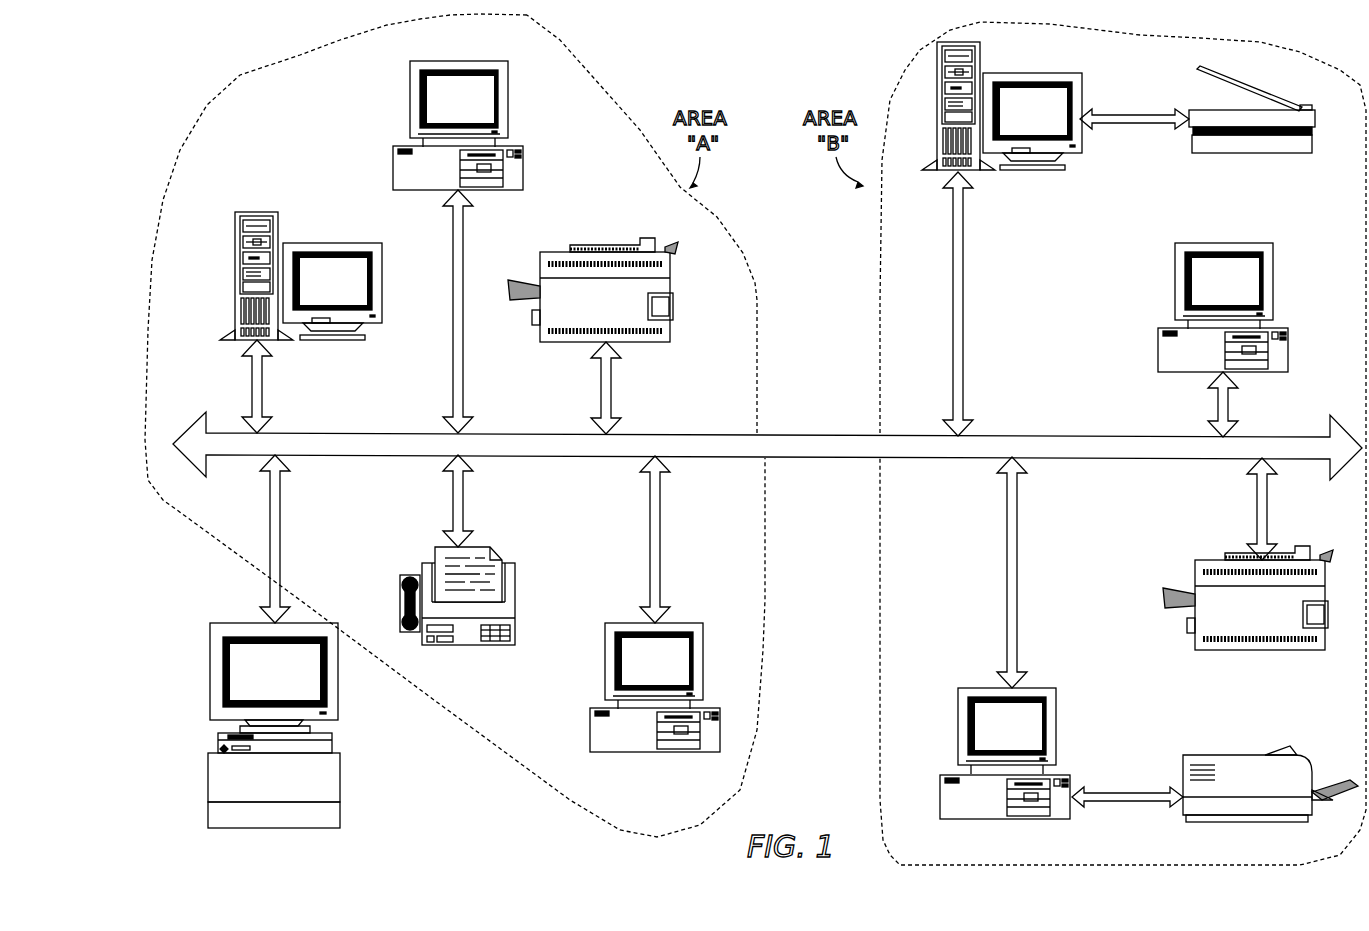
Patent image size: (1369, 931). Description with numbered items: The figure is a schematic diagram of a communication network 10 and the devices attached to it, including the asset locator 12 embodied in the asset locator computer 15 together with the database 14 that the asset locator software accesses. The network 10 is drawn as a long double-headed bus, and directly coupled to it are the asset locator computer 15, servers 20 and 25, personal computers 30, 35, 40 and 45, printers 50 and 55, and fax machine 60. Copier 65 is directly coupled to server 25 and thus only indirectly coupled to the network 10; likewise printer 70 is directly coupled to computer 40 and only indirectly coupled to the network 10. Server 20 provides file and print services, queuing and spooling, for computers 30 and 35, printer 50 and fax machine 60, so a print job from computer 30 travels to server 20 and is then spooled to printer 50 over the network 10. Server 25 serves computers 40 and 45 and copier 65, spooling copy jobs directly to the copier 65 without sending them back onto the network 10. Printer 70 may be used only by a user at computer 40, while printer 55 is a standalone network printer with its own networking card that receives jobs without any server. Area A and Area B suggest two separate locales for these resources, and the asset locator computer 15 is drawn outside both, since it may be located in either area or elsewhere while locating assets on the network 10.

The communication network 10 is at (785, 408).
The asset locator 12 is at (340, 763).
The database 14 is at (340, 815).
The asset locator computer 15 is at (194, 733).
The server 20 is at (235, 308).
The server 25 is at (937, 137).
The personal computer 30 is at (393, 165).
The personal computer 35 is at (718, 720).
The personal computer 40 is at (940, 790).
The personal computer 45 is at (1158, 340).
The printer 50 is at (670, 282).
The printer 55 is at (1195, 572).
The fax machine 60 is at (515, 595).
The copier 65 is at (1315, 118).
The printer 70 is at (1183, 770).